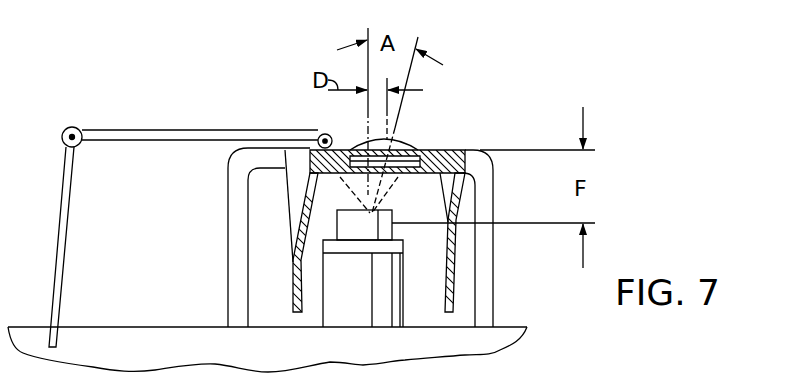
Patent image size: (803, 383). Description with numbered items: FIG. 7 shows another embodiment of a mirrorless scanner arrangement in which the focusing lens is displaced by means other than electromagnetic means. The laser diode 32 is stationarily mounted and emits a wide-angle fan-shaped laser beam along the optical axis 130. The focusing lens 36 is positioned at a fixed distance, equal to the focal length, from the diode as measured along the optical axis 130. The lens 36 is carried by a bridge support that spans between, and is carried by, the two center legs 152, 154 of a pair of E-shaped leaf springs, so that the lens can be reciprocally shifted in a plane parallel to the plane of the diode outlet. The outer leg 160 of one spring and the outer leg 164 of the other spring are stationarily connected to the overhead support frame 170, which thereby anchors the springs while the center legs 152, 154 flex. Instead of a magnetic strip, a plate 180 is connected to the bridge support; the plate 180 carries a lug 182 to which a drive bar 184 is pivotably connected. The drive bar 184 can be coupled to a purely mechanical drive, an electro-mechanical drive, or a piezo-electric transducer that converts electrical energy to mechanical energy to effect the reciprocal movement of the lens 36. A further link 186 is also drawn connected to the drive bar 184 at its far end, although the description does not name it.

The optical axis 130 is at (366, 31).
The lug 182 is at (327, 131).
The drive bar 184 is at (143, 130).
The link 186 is at (58, 270).
The focusing lens 36 is at (408, 141).
The plate 180 is at (446, 150).
The outer leg 160 is at (395, 211).
The outer leg 164 is at (285, 193).
The center leg 154 is at (292, 272).
The laser diode 32 is at (403, 238).
The center leg 152 is at (456, 283).
The overhead support frame 170 is at (494, 307).